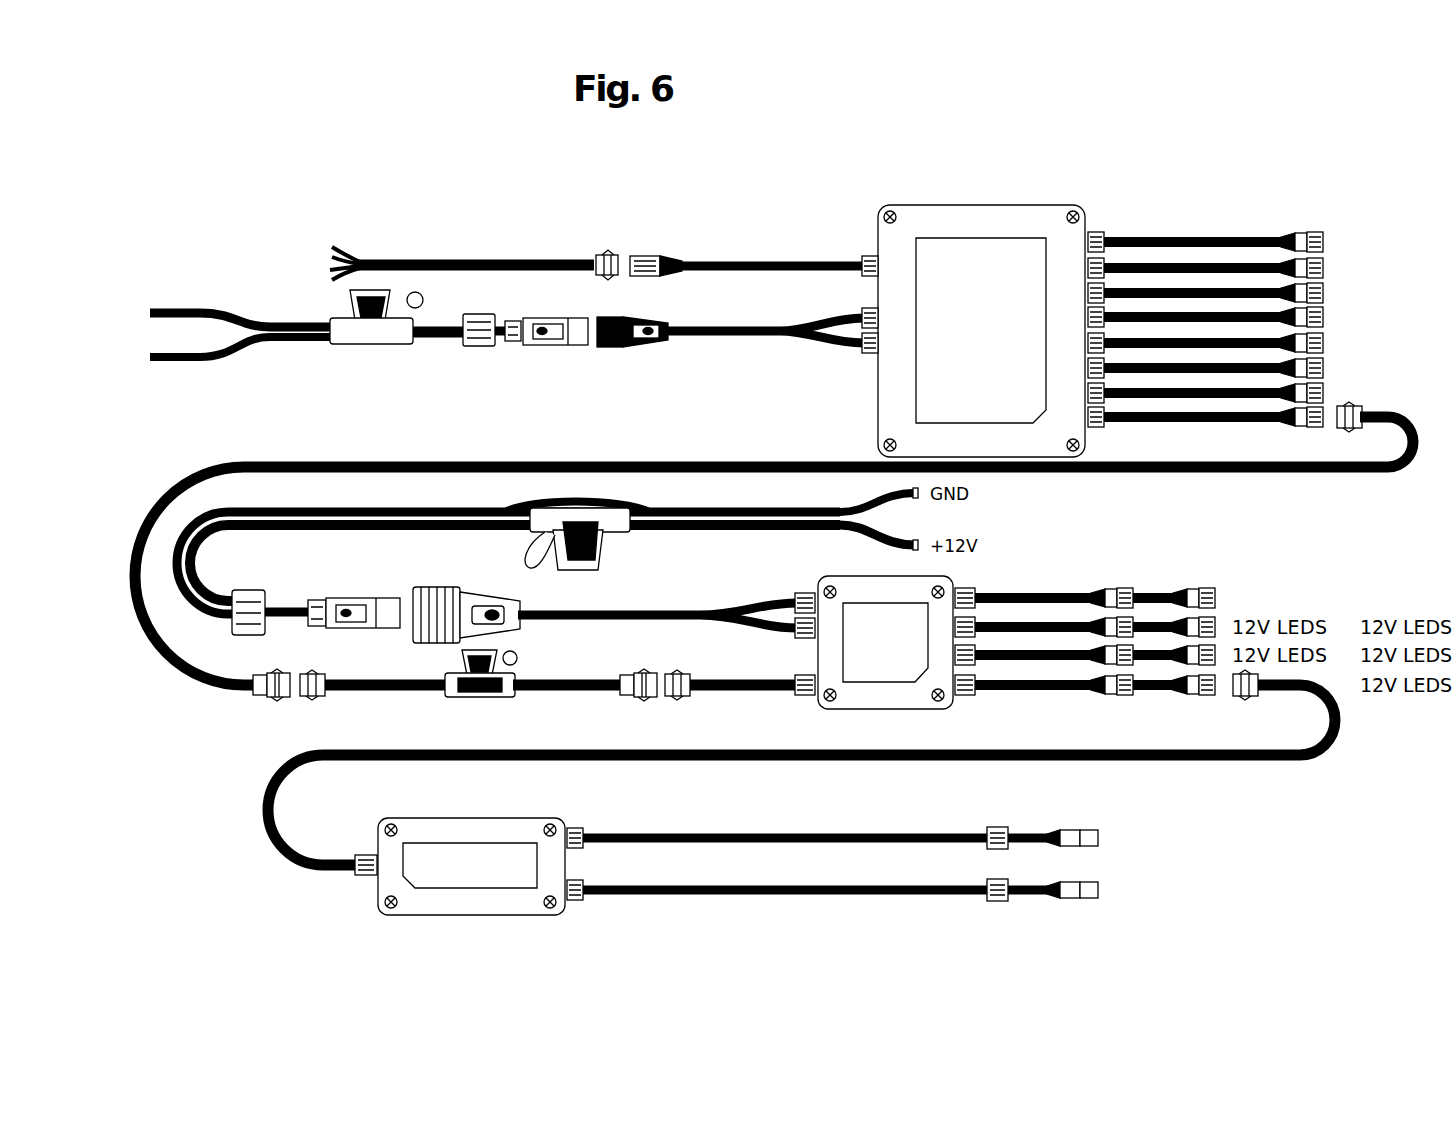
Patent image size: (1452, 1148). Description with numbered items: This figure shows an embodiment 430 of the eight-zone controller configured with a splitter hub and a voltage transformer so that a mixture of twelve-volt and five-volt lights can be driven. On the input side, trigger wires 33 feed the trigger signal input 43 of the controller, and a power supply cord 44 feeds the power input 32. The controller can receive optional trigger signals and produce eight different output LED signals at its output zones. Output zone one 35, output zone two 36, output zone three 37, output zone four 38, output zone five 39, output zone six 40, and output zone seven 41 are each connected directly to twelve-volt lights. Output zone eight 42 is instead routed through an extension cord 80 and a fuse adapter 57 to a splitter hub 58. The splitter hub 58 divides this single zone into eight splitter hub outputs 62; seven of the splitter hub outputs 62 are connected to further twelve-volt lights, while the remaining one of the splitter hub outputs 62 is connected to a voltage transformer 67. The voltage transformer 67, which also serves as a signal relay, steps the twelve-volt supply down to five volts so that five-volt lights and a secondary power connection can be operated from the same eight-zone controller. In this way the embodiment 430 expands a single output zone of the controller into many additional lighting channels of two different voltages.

The embodiment of the eight-zone controller 430 is at (1250, 105).
The trigger wires 33 is at (455, 258).
The trigger signal input 43 is at (738, 258).
The power supply cord 44 is at (345, 355).
The power input 32 is at (735, 342).
The output zone one 35 is at (1322, 232).
The output zone two 36 is at (1266, 261).
The output zone three 37 is at (1228, 285).
The output zone four 38 is at (1185, 309).
The output zone five 39 is at (1148, 335).
The output zone six 40 is at (1120, 358).
The output zone seven 41 is at (1124, 398).
The output zone eight 42 is at (1185, 395).
The extension cord 80 is at (1385, 478).
The fuse adapter 57 is at (562, 700).
The splitter hub 58 is at (882, 662).
The splitter hub outputs 62 is at (1215, 582).
The voltage transformer 67 is at (882, 888).